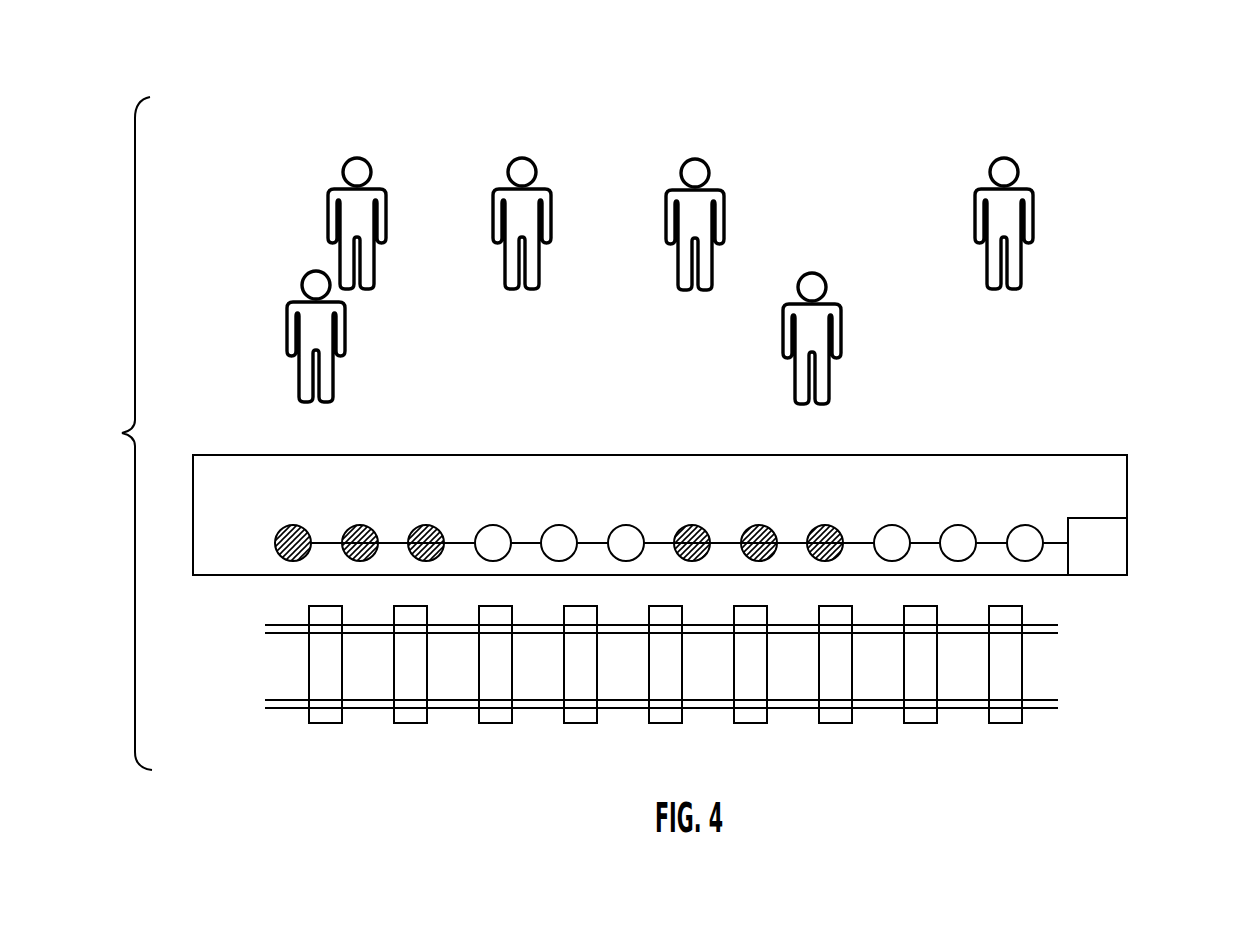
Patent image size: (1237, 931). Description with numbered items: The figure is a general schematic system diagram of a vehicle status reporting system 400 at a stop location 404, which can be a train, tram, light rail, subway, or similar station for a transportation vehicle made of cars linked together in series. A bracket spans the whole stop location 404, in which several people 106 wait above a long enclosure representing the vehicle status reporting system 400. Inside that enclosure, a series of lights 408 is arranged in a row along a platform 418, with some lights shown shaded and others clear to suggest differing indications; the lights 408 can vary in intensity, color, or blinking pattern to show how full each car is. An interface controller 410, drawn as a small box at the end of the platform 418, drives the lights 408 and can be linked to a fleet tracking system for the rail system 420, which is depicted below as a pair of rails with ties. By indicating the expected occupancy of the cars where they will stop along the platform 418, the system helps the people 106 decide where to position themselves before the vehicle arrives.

The stop location 404 is at (298, 118).
The people 106 is at (375, 268).
The vehicle status reporting system 400 is at (219, 474).
The series of lights 408 is at (366, 527).
The platform 418 is at (1117, 494).
The interface controller 410 is at (1117, 563).
The rail system 420 is at (1028, 672).